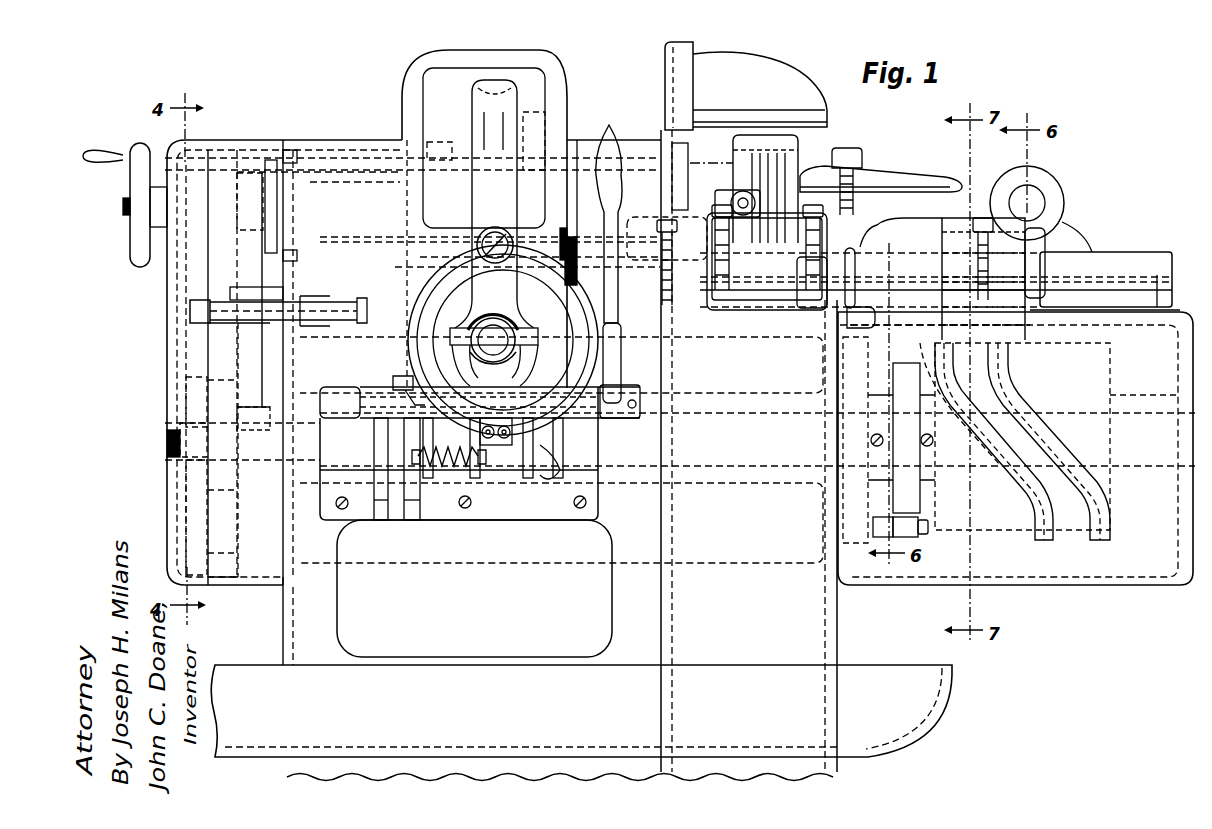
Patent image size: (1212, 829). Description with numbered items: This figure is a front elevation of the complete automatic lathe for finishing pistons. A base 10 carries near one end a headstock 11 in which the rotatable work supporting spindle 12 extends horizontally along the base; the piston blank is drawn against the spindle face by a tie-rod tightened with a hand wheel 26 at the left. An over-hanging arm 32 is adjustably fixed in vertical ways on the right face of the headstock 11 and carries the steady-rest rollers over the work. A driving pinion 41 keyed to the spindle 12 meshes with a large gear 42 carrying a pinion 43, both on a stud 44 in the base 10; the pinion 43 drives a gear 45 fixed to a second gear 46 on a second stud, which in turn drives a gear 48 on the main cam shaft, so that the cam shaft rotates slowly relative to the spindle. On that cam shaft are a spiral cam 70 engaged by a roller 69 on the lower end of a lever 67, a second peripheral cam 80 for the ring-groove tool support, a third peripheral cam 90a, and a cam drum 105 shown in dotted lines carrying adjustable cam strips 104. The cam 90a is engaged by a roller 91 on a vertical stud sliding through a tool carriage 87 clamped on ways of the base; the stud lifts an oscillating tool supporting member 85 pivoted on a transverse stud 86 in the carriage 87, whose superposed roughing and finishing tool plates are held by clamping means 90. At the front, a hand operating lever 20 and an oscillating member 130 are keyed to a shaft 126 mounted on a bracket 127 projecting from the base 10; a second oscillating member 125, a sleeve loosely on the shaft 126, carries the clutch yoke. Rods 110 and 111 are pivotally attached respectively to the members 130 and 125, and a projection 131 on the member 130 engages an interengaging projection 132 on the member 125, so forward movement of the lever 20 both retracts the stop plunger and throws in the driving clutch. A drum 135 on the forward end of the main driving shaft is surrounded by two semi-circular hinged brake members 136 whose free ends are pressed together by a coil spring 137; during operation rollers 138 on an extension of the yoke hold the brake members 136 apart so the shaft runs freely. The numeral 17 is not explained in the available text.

The base 10 is at (803, 632).
The headstock 11 is at (405, 82).
The work supporting spindle 12 is at (330, 186).
The slotted guide 17 is at (494, 80).
The hand operating lever 20 is at (613, 177).
The hand wheel 26 is at (136, 262).
The over-hanging arm 32 is at (704, 58).
The driving pinion 41 is at (247, 172).
The large gear 42 is at (245, 273).
The pinion 43 is at (187, 300).
The stud 44 is at (306, 300).
The gear 45 is at (218, 351).
The second gear 46 is at (196, 385).
The gear 48 is at (190, 523).
The lever 67 is at (880, 538).
The roller 69 is at (918, 533).
The cam 70 is at (912, 497).
The second peripheral cam 80 is at (600, 548).
The oscillating tool supporting member 85 is at (975, 196).
The transverse stud 86 is at (1037, 200).
The tool carriage 87 is at (1120, 264).
The clamping means 90 is at (880, 180).
The third peripheral cam 90a is at (856, 524).
The roller 91 is at (845, 335).
The cam strips 104 is at (1005, 392).
The cam drum 105 is at (1090, 376).
The rod 110 is at (378, 520).
The rod 111 is at (412, 520).
The oscillating member 125 is at (415, 488).
The shaft 126 is at (330, 390).
The bracket 127 is at (332, 502).
The oscillating member 130 is at (376, 437).
The projection 131 is at (403, 378).
The interengaging projection 132 is at (412, 392).
The drum 135 is at (431, 302).
The hinged brake members 136 is at (462, 270).
The coil spring 137 is at (449, 447).
The rollers 138 is at (492, 445).